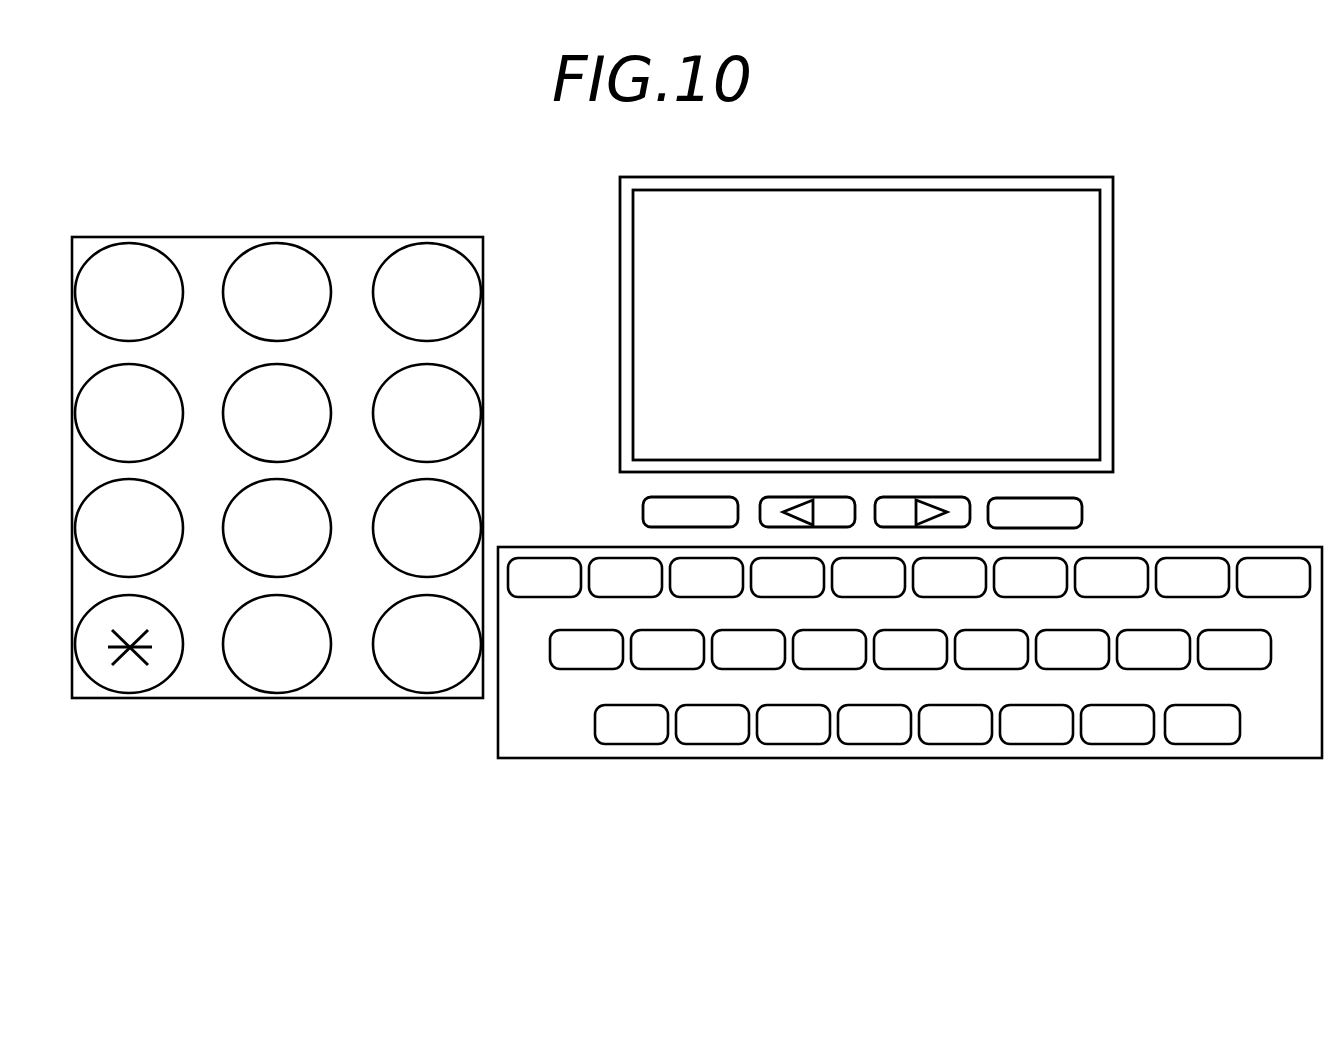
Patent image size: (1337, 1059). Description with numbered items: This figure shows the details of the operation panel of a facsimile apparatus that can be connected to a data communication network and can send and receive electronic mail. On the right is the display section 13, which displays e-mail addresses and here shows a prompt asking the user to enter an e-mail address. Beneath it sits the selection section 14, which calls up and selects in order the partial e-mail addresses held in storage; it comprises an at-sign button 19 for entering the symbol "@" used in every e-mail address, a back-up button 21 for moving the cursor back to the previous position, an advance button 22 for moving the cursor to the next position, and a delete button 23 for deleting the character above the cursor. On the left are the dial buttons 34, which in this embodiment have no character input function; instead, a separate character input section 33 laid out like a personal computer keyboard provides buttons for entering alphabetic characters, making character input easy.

The display section 13 is at (1113, 292).
The selection section 14 is at (1107, 483).
The at-sign button 19 is at (655, 510).
The back-up button 21 is at (781, 521).
The advance button 22 is at (955, 520).
The delete button 23 is at (1084, 510).
The character input section 33 is at (1082, 746).
The dial buttons 34 is at (355, 686).